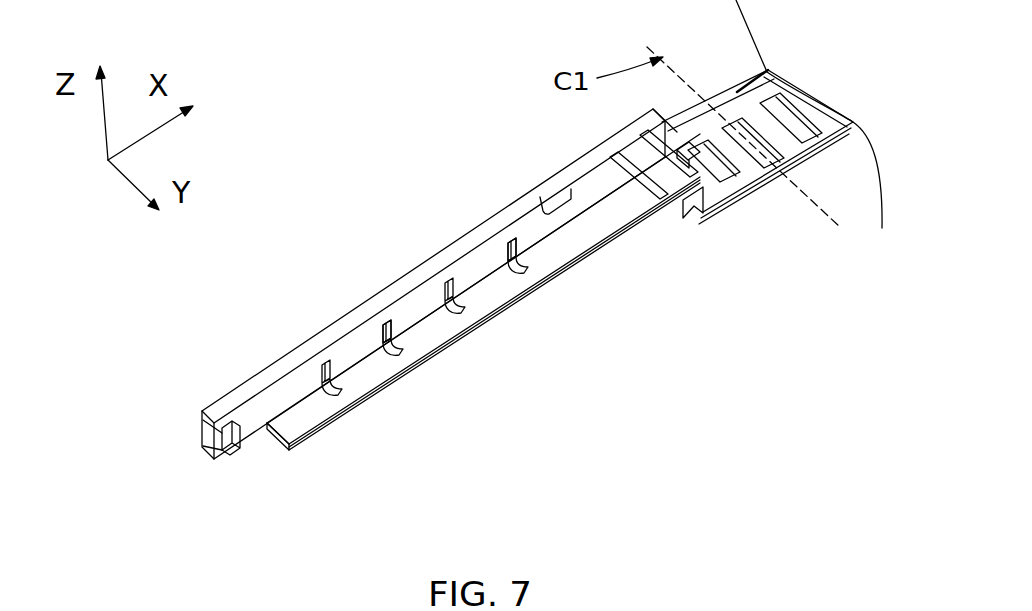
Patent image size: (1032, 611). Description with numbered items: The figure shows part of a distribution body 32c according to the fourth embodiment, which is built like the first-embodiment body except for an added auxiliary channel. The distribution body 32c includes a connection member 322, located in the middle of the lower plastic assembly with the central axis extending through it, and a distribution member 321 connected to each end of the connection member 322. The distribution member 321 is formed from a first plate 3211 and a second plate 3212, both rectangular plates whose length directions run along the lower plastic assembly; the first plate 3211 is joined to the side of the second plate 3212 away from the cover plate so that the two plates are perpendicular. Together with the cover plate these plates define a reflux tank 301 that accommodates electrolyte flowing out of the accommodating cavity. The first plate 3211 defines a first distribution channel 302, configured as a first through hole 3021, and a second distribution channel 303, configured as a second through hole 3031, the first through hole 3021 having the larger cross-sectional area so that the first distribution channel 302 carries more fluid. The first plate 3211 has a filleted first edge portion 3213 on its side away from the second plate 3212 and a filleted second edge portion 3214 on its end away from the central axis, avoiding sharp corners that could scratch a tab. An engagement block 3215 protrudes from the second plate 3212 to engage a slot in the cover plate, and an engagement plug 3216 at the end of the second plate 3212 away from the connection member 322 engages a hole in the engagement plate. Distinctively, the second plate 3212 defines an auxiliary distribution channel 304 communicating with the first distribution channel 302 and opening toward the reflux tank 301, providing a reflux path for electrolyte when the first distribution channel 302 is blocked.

The distribution body 32c is at (442, 44).
The connection member 322 is at (770, 66).
The engagement block 3215 is at (573, 190).
The auxiliary distribution channel 304 is at (448, 290).
The first distribution channel 302 is at (525, 272).
The first through hole 3021 is at (512, 249).
The second plate 3212 is at (253, 400).
The first plate 3211 is at (445, 325).
The distribution member 321 is at (634, 388).
The engagement plug 3216 is at (222, 441).
The second distribution channel 303 is at (395, 354).
The second through hole 3031 is at (387, 331).
The first edge portion 3213 is at (325, 434).
The second edge portion 3214 is at (284, 449).
The reflux tank 301 is at (262, 469).